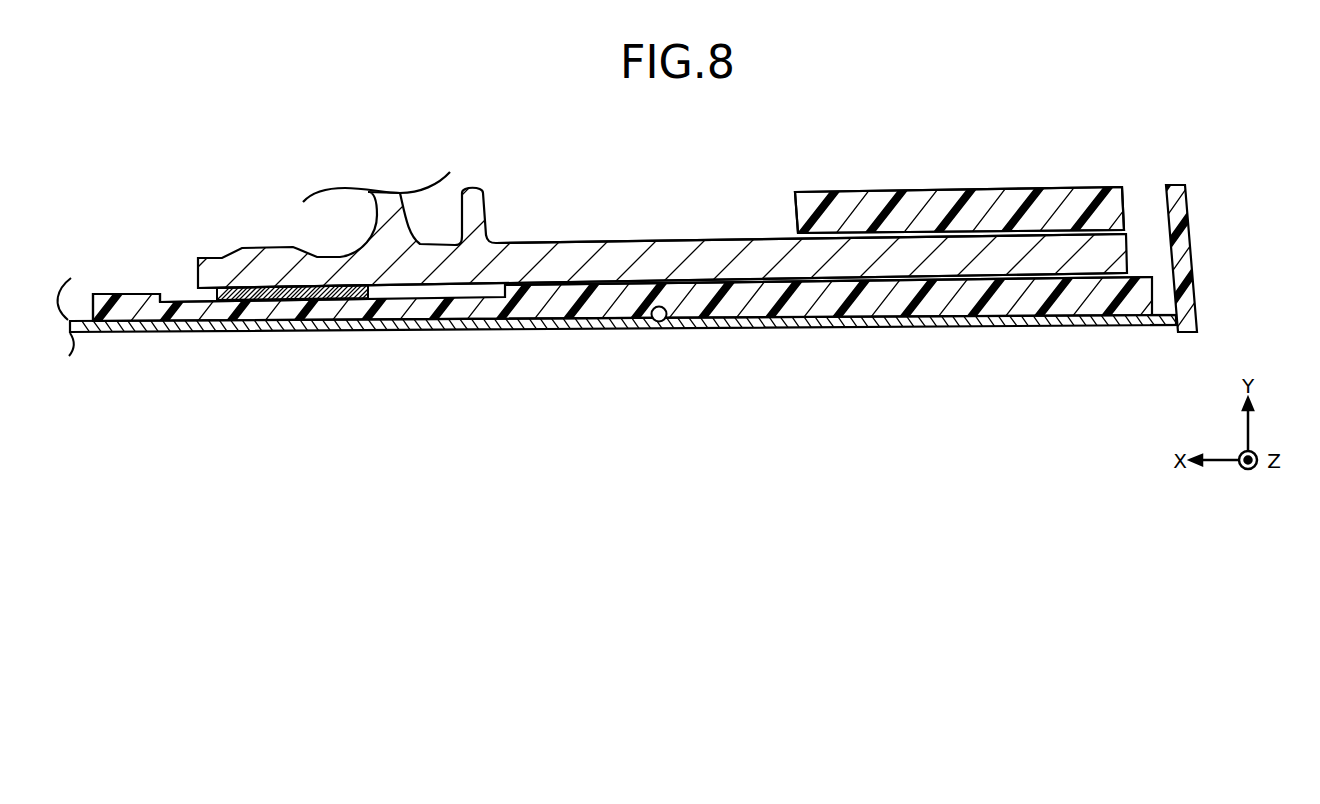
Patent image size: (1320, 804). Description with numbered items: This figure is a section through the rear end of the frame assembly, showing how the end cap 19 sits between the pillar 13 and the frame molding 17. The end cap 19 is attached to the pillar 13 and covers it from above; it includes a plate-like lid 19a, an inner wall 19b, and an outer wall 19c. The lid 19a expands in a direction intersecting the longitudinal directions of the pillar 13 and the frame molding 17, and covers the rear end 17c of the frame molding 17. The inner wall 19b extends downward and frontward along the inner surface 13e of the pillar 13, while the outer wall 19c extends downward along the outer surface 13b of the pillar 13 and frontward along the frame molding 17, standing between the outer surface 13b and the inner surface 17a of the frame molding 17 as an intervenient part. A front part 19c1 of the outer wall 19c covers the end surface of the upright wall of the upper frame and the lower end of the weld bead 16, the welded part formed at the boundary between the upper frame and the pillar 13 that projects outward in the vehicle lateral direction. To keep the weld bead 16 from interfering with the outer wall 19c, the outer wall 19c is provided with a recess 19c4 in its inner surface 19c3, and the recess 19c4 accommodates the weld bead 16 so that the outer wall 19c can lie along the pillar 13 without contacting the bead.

The pillar 13 is at (1136, 246).
The outer surface of the pillar 13b is at (1018, 275).
The inner surface of the pillar 13e is at (569, 243).
The weld bead 16 is at (288, 310).
The frame molding 17 is at (1157, 331).
The inner surface of the frame molding 17a is at (660, 322).
The rear end of the frame molding 17c is at (1190, 319).
The end cap 19 is at (1088, 183).
The lid 19a is at (1182, 200).
The inner wall 19b is at (980, 207).
The outer wall 19c is at (795, 303).
The front part of the outer wall 19c1 is at (93, 306).
The inner surface of the outer wall 19c3 is at (688, 282).
The recess 19c4 is at (182, 301).